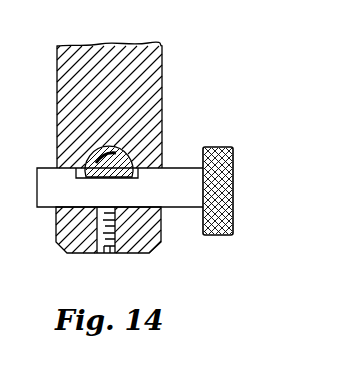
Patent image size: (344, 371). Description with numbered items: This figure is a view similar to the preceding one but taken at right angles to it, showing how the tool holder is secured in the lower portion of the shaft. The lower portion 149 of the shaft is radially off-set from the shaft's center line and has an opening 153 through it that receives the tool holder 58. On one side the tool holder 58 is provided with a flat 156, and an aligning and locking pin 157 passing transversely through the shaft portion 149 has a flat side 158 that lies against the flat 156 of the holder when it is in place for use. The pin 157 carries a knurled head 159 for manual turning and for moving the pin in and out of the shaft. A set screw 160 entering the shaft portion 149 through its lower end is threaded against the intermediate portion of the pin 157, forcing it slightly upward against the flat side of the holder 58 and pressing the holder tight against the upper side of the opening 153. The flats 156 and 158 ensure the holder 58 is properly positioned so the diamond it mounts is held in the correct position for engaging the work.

The lower portion of the shaft 149 is at (163, 90).
The tool holder 58 is at (97, 151).
The opening 153 is at (89, 160).
The flat 156 is at (163, 122).
The flat side 158 is at (131, 160).
The aligning and locking pin 157 is at (193, 207).
The knurled head 159 is at (233, 180).
The set screw 160 is at (100, 254).